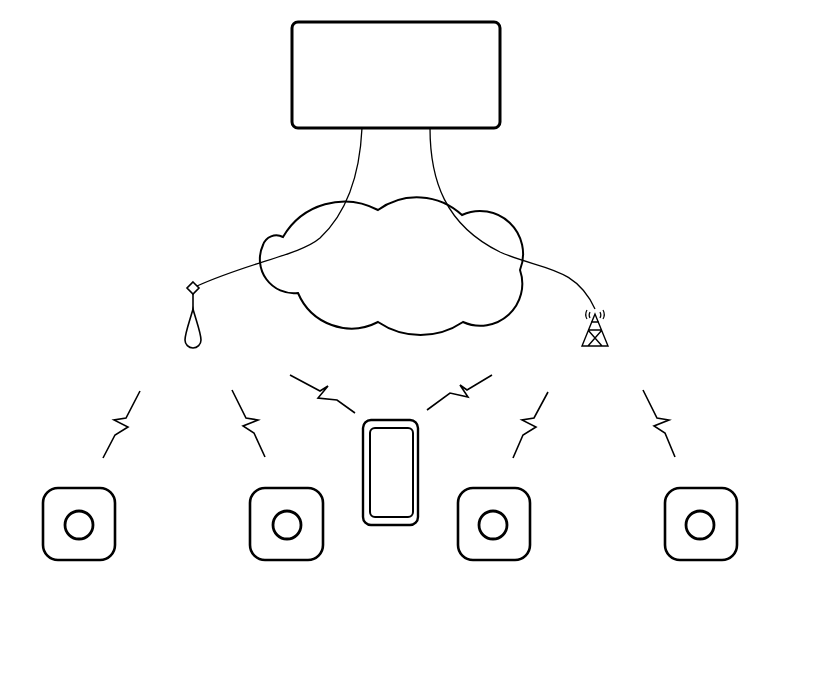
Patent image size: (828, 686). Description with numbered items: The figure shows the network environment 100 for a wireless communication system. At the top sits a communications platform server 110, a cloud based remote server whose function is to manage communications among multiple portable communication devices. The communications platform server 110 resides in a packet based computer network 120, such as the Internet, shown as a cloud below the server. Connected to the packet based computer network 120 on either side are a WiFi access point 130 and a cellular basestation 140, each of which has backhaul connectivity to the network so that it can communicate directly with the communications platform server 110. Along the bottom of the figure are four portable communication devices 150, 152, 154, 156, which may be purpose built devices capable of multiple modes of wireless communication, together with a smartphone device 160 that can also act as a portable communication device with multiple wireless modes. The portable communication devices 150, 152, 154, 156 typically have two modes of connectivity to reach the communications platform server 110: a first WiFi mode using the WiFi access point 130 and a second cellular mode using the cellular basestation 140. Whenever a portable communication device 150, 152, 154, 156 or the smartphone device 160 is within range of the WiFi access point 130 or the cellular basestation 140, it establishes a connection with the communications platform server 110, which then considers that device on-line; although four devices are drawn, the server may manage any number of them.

The communication system 100 is at (184, 76).
The communications platform server 110 is at (385, 103).
The packet based computer network 120 is at (401, 273).
The WiFi access point 130 is at (178, 282).
The cellular basestation 140 is at (618, 297).
The portable communication device 150 is at (78, 563).
The portable communication device 152 is at (285, 563).
The portable communication device 154 is at (493, 563).
The portable communication device 156 is at (702, 563).
The smartphone device 160 is at (382, 527).